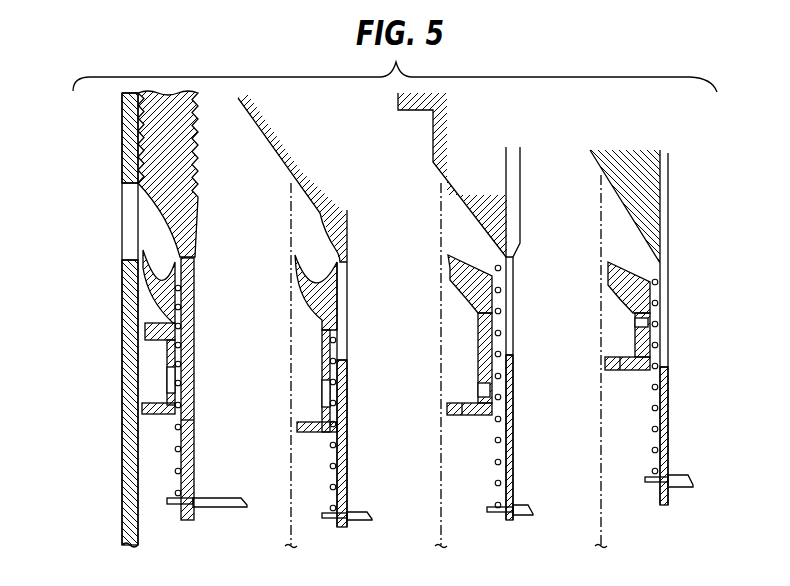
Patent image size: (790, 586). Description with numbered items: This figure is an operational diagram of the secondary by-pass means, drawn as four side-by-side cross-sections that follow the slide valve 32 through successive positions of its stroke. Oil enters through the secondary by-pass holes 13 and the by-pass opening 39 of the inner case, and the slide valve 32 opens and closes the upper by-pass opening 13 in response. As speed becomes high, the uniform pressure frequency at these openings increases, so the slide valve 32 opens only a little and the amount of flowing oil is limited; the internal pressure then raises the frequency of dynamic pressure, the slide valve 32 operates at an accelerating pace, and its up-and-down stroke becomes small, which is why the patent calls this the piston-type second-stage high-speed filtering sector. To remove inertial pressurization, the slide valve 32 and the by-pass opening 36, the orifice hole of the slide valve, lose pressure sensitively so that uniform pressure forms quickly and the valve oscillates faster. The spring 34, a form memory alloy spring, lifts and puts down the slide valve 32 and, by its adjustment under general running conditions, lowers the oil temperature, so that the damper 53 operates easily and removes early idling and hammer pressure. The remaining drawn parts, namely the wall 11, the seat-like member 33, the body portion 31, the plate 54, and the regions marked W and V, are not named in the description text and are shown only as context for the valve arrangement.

The container tube 11 is at (130, 163).
The secondary by-pass hole 13 is at (131, 240).
The valve body 31 is at (172, 382).
The slide valve 32 is at (190, 326).
The seat member 33 is at (143, 290).
The form memory alloy spring 34 is at (176, 451).
The by-pass opening 36 is at (187, 420).
The by-pass opening 39 is at (169, 376).
The damper 53 is at (222, 507).
The retaining plate 54 is at (177, 504).
The workpiece W is at (156, 212).
The valve gap V is at (318, 281).